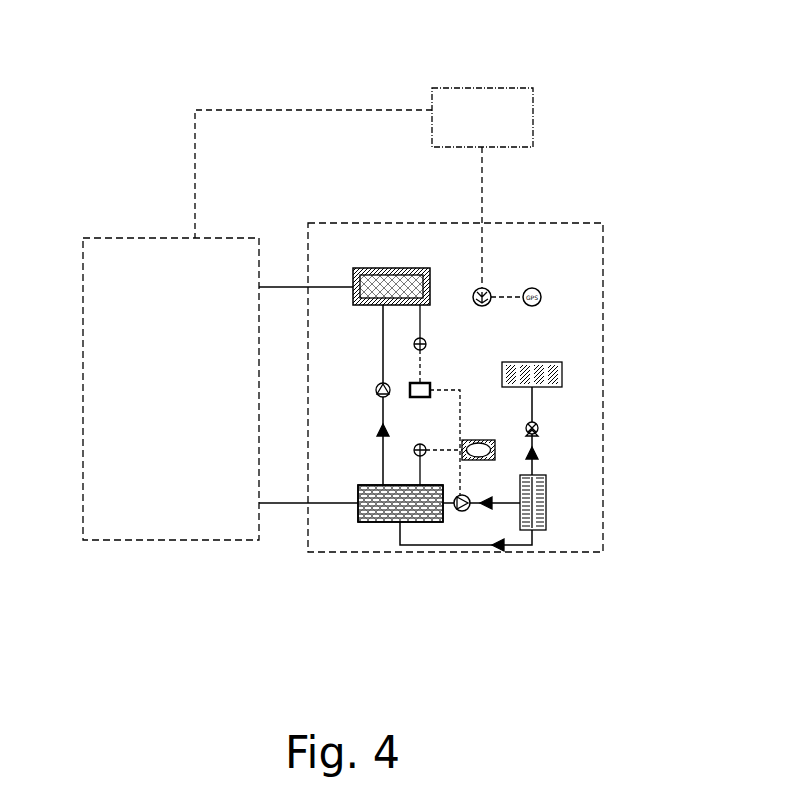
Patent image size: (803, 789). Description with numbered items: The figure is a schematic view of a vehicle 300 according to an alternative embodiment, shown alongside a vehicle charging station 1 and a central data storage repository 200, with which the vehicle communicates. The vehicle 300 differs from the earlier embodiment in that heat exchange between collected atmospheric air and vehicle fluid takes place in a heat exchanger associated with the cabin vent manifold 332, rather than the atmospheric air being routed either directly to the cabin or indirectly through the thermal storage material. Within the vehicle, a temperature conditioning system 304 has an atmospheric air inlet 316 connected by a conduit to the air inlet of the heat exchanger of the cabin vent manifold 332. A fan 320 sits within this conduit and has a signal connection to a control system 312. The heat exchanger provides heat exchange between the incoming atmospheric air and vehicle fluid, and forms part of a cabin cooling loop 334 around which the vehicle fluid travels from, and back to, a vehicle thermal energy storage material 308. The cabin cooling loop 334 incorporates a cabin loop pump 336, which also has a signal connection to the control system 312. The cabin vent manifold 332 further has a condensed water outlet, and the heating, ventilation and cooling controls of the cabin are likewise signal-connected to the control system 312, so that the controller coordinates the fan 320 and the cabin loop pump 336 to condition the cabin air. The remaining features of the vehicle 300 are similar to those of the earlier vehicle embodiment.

The vehicle charging station 1 is at (100, 263).
The central data storage repository 200 is at (517, 95).
The vehicle 300 is at (578, 452).
The temperature conditioning system 304 is at (431, 522).
The vehicle thermal energy storage material 308 is at (360, 510).
The control system 312 is at (430, 383).
The atmospheric air inlet 316 is at (562, 371).
The fan 320 is at (538, 425).
The cabin vent manifold 332 is at (546, 520).
The cabin cooling loop 334 is at (513, 547).
The cabin loop pump 336 is at (458, 512).